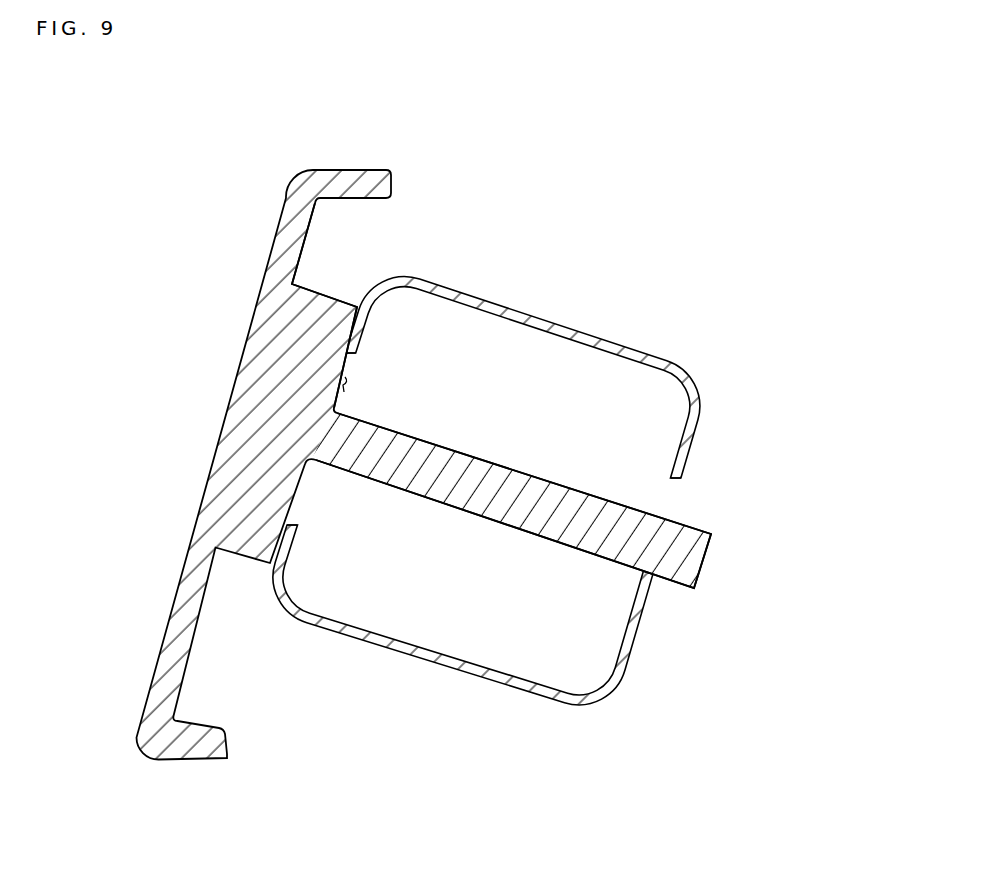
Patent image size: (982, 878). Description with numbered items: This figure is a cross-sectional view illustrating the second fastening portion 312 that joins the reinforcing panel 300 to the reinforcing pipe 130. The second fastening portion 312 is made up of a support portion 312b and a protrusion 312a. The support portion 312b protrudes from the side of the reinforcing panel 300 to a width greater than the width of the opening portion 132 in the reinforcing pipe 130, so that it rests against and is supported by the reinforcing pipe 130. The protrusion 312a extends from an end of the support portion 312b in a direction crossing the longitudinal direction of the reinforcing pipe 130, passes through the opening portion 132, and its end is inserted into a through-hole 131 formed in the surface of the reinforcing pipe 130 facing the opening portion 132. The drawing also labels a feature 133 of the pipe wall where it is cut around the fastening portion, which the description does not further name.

The reinforcing pipe 130 is at (707, 372).
The through-hole 131 is at (665, 526).
The opening portion 132 is at (343, 379).
The cut portion of pipe 133 is at (370, 293).
The reinforcing panel 300 is at (389, 499).
The second fastening portion 312 is at (393, 505).
The protrusion 312a is at (510, 470).
The support portion 312b is at (327, 293).